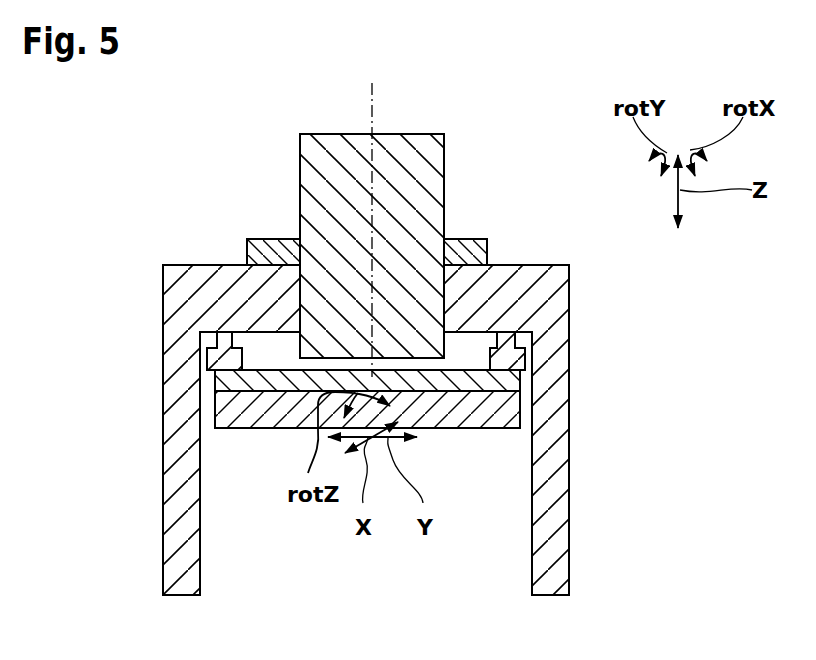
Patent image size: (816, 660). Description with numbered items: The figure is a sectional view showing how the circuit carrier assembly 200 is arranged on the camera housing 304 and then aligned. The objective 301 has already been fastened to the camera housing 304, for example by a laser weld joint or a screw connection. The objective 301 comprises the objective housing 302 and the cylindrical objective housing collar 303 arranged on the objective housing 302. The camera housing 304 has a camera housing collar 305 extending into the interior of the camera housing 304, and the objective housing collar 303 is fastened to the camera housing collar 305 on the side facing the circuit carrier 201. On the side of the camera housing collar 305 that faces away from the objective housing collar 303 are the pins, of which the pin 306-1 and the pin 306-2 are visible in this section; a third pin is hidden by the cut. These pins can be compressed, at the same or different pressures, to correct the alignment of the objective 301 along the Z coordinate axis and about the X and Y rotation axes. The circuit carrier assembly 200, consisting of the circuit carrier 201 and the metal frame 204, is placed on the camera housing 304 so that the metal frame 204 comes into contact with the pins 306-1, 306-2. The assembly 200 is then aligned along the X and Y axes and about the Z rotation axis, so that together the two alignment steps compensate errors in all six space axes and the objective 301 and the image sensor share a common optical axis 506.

The circuit carrier assembly 200 is at (470, 448).
The circuit carrier 201 is at (500, 412).
The metal frame 204 is at (230, 380).
The objective 301 is at (305, 112).
The objective housing 302 is at (444, 158).
The objective housing collar 303 is at (456, 246).
The camera housing 304 is at (560, 550).
The camera housing collar 305 is at (207, 273).
The pin 306-1 is at (232, 360).
The pin 306-2 is at (508, 360).
The common optical axis 506 is at (372, 95).